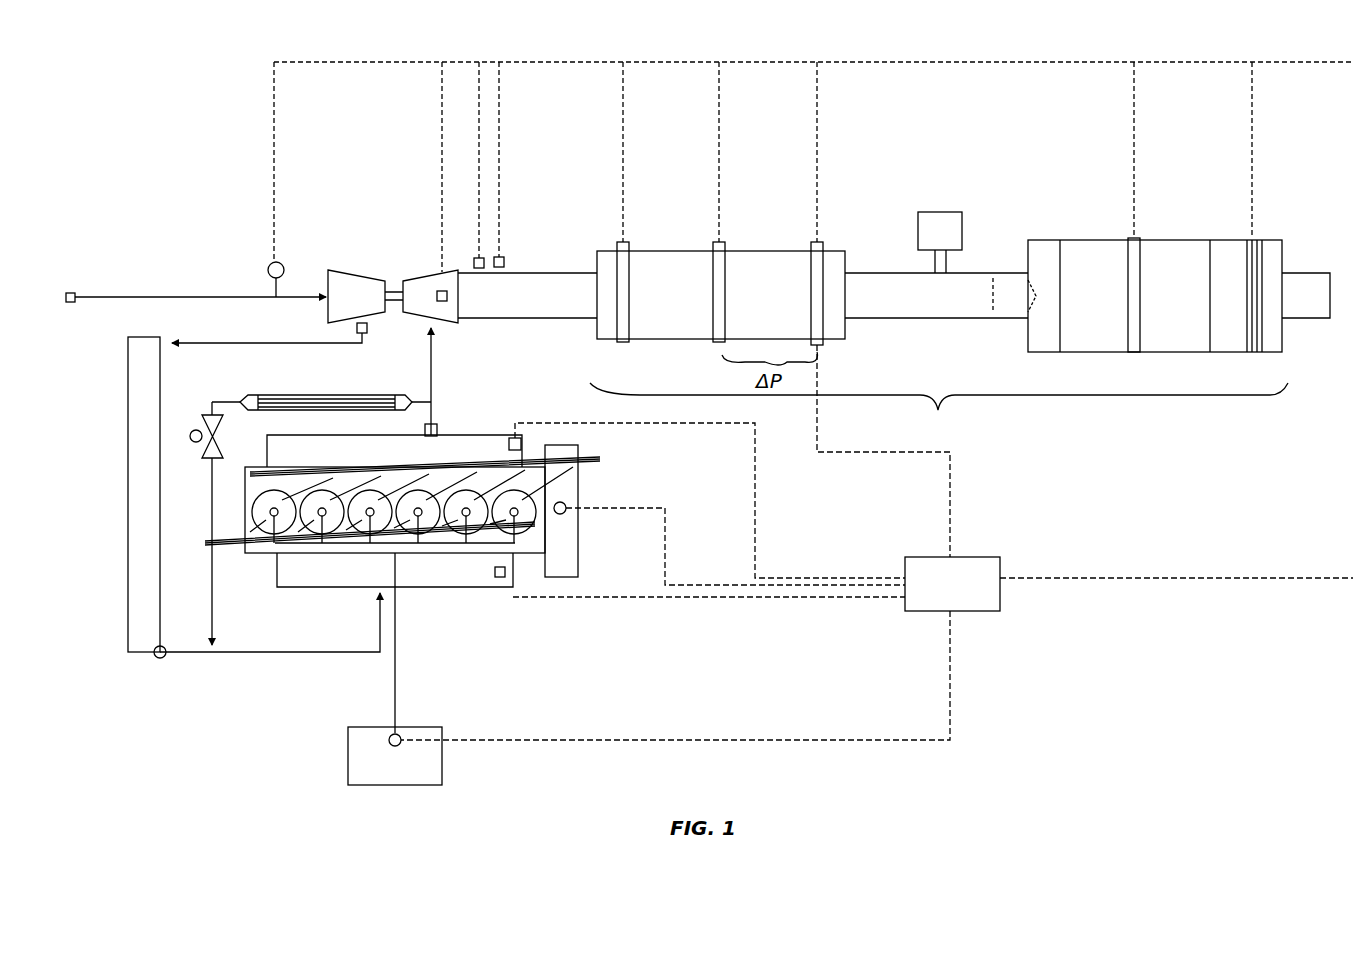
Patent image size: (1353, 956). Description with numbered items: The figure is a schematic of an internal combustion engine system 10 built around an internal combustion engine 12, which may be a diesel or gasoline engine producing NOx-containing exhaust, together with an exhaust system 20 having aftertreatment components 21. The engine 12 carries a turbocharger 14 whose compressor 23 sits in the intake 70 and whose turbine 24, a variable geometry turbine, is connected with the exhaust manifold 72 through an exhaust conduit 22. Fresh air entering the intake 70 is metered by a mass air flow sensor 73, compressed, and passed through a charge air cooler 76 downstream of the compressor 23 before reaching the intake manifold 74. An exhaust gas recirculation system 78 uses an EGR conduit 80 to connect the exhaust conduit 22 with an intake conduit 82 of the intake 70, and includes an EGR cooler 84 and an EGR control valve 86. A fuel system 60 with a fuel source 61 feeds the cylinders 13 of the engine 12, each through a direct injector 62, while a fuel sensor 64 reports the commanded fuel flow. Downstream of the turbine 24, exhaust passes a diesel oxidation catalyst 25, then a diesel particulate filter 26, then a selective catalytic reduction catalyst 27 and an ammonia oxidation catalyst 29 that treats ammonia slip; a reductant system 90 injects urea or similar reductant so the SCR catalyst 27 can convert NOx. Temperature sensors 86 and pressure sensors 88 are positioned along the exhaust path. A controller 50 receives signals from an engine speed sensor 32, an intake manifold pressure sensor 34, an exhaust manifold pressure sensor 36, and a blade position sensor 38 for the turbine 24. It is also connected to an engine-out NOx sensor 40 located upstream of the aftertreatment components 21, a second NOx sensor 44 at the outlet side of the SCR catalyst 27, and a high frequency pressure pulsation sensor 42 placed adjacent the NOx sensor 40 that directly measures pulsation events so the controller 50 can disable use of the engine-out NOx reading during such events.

The internal combustion engine system 10 is at (142, 78).
The internal combustion engine 12 is at (399, 549).
The cylinders 13 is at (440, 463).
The turbocharger 14 is at (330, 258).
The exhaust system 20 is at (926, 130).
The aftertreatment components 21 is at (939, 416).
The exhaust conduit 22 is at (440, 363).
The compressor 23 is at (322, 315).
The turbine 24 is at (422, 282).
The diesel oxidation catalyst 25 is at (672, 251).
The diesel particulate filter 26 is at (768, 251).
The selective catalytic reduction catalyst 27 is at (1090, 240).
The ammonia oxidation catalyst 29 is at (1228, 240).
The engine speed sensor 32 is at (570, 512).
The intake manifold pressure sensor 34 is at (500, 583).
The exhaust manifold pressure sensor 36 is at (516, 437).
The blade position sensor 38 is at (437, 303).
The engine-out NOx sensor 40 is at (474, 258).
The high frequency pressure pulsation sensor 42 is at (502, 257).
The second NOx sensor 44 is at (1254, 238).
The controller 50 is at (877, 648).
The fuel system 60 is at (346, 756).
The fuel source 61 is at (397, 786).
The direct injector 62 is at (206, 540).
The fuel sensor 64 is at (385, 735).
The intake 70 is at (152, 305).
The exhaust manifold 72 is at (463, 435).
The mass air flow sensor 73 is at (268, 266).
The intake manifold 74 is at (462, 590).
The charge air cooler 76 is at (128, 418).
The exhaust gas recirculation system 78 is at (222, 376).
The EGR conduit 80 is at (212, 605).
The intake conduit 82 is at (298, 655).
The EGR cooler 84 is at (308, 393).
The EGR control valve / temperature sensors 86 is at (619, 242).
The pressure sensors 88 is at (824, 343).
The reductant system 90 is at (940, 212).